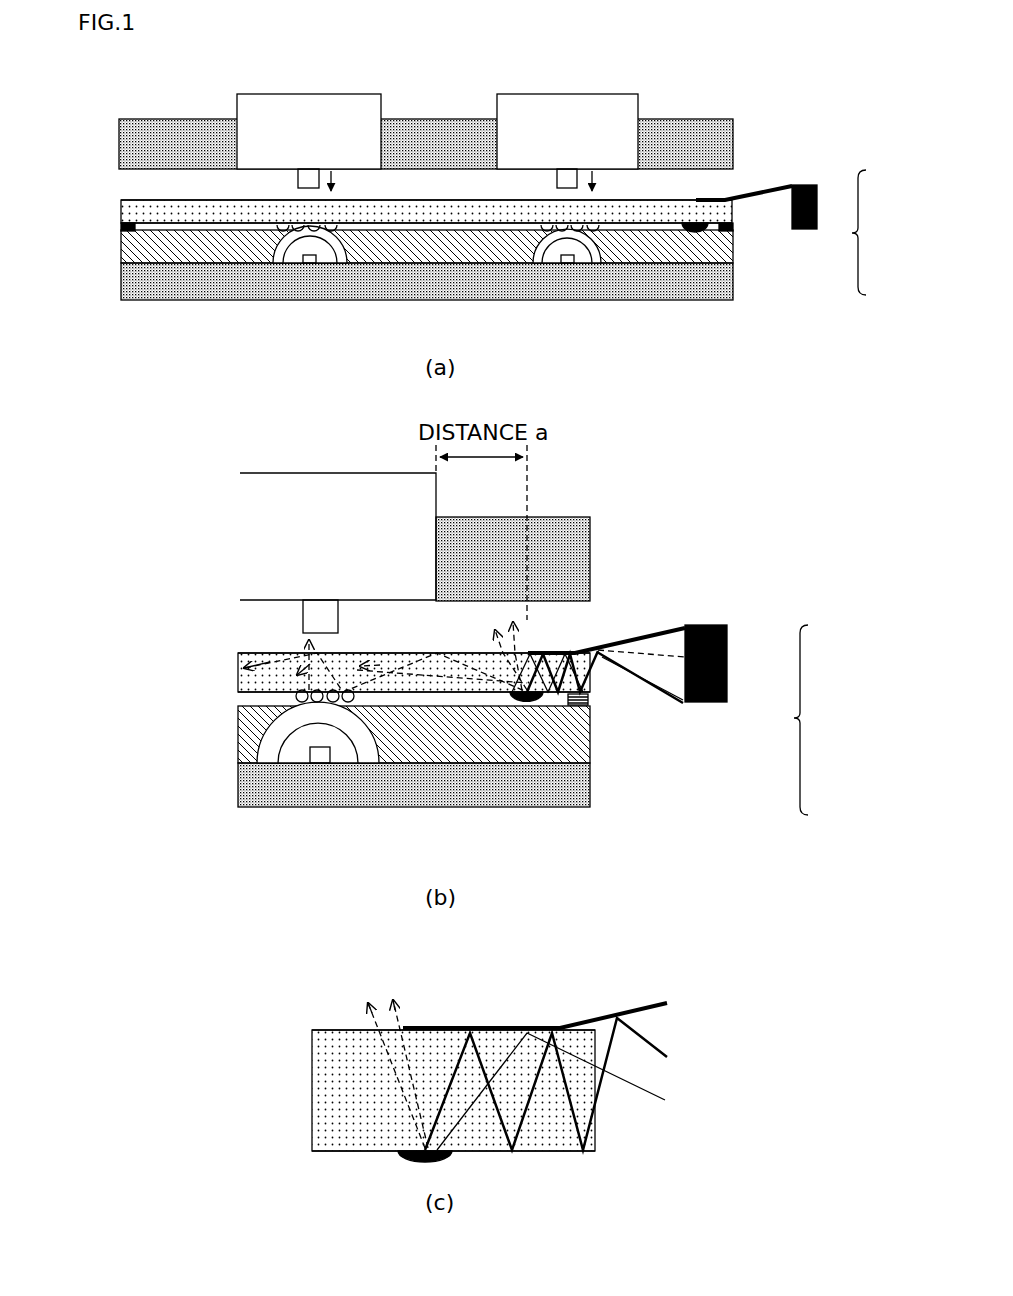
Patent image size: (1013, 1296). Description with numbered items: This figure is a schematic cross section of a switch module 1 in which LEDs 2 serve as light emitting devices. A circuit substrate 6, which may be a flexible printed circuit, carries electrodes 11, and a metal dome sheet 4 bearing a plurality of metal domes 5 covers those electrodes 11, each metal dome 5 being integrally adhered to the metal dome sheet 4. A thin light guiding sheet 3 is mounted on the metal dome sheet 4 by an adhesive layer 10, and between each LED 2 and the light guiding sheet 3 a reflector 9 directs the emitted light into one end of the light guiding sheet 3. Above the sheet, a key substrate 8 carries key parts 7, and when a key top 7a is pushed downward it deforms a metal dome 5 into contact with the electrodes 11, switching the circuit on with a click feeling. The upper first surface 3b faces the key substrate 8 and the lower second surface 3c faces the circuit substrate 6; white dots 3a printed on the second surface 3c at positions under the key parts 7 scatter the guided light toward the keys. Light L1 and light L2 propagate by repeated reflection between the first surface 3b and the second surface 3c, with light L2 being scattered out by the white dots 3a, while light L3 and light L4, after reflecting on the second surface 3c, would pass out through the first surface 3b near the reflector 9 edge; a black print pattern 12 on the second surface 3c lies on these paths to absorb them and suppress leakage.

The switch module 1 is at (839, 492).
The LED 2 is at (817, 207).
The light guiding sheet 3 is at (122, 207).
The white dots 3a is at (278, 231).
The first surface 3b is at (130, 200).
The second surface 3c is at (123, 220).
The metal dome sheet 4 is at (733, 260).
The metal dome 5 is at (288, 256).
The circuit substrate 6 is at (733, 288).
The key part 7 is at (283, 93).
The key top 7a is at (298, 185).
The key substrate 8 is at (728, 151).
The reflector 9 is at (762, 188).
The adhesive layer 10 is at (123, 228).
The electrode 11 is at (312, 265).
The print pattern 12 is at (693, 231).
The light L1 is at (345, 672).
The light L2 is at (380, 672).
The light L3 is at (667, 700).
The light L4 is at (625, 675).